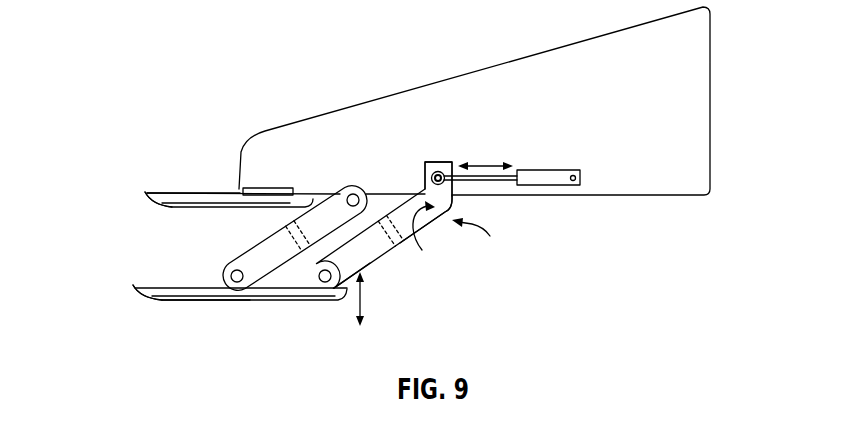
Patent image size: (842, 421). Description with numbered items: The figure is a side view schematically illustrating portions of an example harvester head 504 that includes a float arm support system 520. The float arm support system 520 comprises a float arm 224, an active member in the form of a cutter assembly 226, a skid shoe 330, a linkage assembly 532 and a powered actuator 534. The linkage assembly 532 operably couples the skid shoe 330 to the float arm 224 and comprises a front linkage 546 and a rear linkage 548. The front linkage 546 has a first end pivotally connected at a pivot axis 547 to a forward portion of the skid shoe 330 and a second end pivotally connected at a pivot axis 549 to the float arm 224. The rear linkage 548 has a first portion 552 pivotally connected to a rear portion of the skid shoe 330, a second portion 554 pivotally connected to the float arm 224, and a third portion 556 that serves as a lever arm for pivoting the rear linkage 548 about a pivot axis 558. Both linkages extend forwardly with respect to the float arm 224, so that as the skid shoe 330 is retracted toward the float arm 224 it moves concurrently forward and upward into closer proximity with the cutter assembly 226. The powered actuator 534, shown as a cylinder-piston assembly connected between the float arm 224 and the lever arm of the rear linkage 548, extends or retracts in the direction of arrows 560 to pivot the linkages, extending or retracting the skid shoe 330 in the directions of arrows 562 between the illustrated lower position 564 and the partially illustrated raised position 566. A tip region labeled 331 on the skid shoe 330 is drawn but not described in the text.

The harvester head 504 is at (120, 108).
The float arm 224 is at (383, 113).
The cutter assembly 226 is at (248, 188).
The raised position 566 is at (171, 186).
The plate tip 331 is at (146, 195).
The skid shoe 330 is at (168, 213).
The lower position 564 is at (147, 303).
The front linkage 546 is at (256, 258).
The pivot axis 547 is at (238, 283).
The pivot axis 549 is at (350, 193).
The linkage assembly 532 is at (395, 258).
The first portion 552 is at (322, 285).
The third portion 556 is at (424, 172).
The second portion 554 is at (441, 216).
The pivot axis 558 is at (428, 237).
The rear linkage 548 is at (365, 267).
The arrows 562 is at (358, 300).
The float arm support system 520 is at (491, 236).
The arrows 560 is at (491, 163).
The powered actuator 534 is at (565, 170).